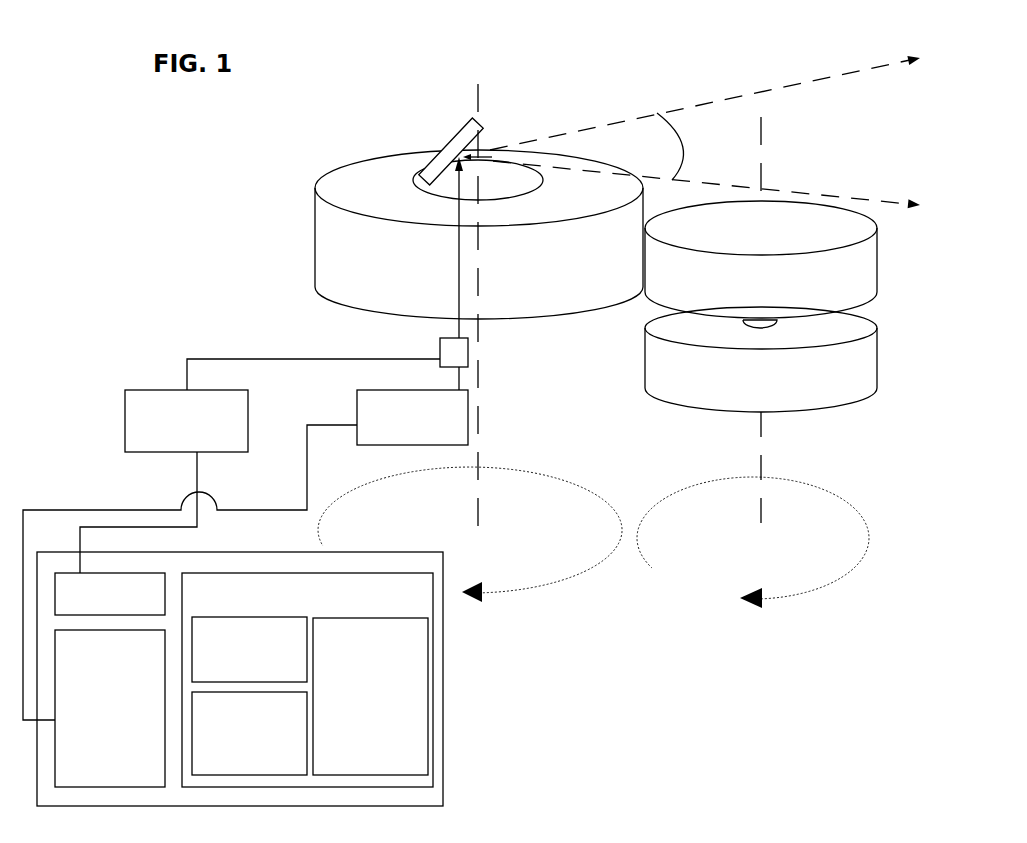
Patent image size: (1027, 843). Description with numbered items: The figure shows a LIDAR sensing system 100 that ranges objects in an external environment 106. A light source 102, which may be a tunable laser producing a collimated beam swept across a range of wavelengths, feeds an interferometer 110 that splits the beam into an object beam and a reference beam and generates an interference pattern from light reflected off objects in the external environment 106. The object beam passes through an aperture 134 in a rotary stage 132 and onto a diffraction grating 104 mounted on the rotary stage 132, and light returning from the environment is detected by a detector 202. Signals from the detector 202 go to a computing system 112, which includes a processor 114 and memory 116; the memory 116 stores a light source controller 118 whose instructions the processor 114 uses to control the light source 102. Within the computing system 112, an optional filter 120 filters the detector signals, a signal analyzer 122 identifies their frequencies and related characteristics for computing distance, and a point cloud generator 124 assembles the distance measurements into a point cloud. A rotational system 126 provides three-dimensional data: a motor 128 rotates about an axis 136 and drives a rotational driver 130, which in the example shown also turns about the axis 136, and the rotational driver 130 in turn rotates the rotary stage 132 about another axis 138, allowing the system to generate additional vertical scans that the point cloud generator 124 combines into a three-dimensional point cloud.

The LIDAR sensing system 100 is at (160, 138).
The light source 102 is at (468, 420).
The diffraction grating 104 is at (445, 146).
The external environment 106 is at (895, 110).
The interferometer 110 is at (468, 362).
The computing system 112 is at (443, 637).
The processor 114 is at (110, 788).
The memory 116 is at (433, 680).
The light source controller 118 is at (428, 697).
The filter 120 is at (108, 573).
The signal analyzer 122 is at (247, 617).
The point cloud generator 124 is at (240, 777).
The rotational system 126 is at (868, 487).
The motor 128 is at (878, 352).
The rotational driver 130 is at (878, 245).
The rotary stage 132 is at (313, 237).
The aperture 134 is at (517, 183).
The axis 136 is at (763, 467).
The axis 138 is at (480, 502).
The detector 202 is at (125, 420).